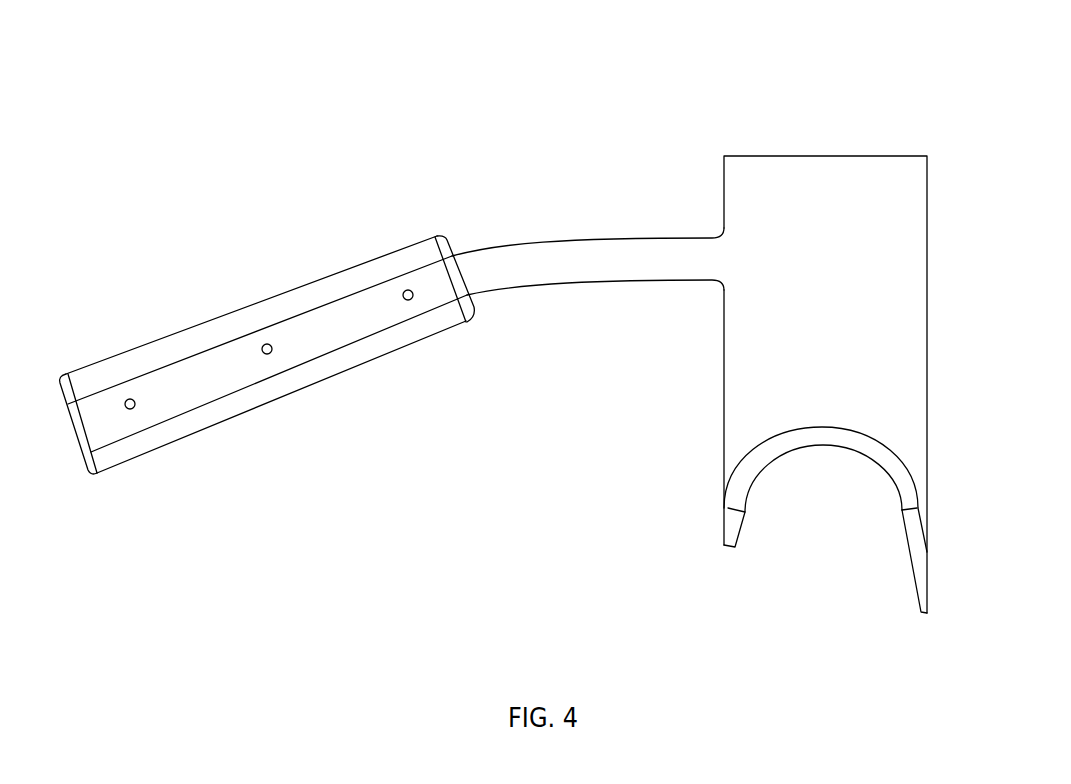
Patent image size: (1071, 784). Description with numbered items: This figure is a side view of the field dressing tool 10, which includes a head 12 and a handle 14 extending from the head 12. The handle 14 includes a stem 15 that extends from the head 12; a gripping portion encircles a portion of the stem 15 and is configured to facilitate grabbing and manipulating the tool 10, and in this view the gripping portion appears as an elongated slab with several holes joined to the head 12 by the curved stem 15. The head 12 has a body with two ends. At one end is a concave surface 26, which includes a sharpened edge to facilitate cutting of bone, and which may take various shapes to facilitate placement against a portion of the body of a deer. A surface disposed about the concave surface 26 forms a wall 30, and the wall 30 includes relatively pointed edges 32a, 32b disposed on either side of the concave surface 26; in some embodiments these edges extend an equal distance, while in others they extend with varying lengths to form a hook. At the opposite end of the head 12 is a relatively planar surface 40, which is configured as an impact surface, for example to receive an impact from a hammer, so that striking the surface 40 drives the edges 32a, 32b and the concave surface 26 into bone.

The tool 10 is at (114, 148).
The head 12 is at (823, 371).
The handle 14 is at (341, 410).
The stem 15 is at (628, 263).
The concave surface 26 is at (824, 447).
The wall 30 is at (751, 391).
The edge 32a is at (725, 545).
The edge 32b is at (925, 613).
The planar surface 40 is at (827, 155).